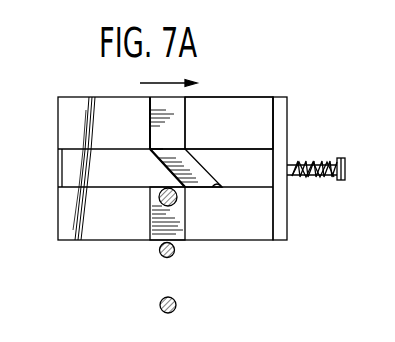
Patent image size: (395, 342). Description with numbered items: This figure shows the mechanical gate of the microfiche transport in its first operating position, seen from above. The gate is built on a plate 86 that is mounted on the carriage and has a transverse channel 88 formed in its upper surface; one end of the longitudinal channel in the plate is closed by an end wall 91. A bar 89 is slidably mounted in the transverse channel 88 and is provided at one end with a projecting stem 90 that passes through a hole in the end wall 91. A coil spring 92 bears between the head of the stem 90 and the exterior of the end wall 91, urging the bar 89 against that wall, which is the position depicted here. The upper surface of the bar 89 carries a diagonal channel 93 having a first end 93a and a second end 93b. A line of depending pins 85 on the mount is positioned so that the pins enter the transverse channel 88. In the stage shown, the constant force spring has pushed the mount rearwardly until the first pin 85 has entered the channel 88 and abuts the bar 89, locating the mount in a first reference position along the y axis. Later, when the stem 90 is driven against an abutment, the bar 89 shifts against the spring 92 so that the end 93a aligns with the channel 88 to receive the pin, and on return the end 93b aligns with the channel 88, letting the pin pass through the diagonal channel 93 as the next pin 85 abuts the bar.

The pins 85 is at (177, 197).
The plate 86 is at (99, 222).
The transverse channel 88 is at (157, 242).
The bar 89 is at (231, 158).
The stem 90 is at (347, 158).
The end wall 91 is at (283, 209).
The coil spring 92 is at (300, 160).
The diagonal channel 93 is at (183, 158).
The end of diagonal channel 93a is at (221, 187).
The end of diagonal channel 93b is at (165, 148).